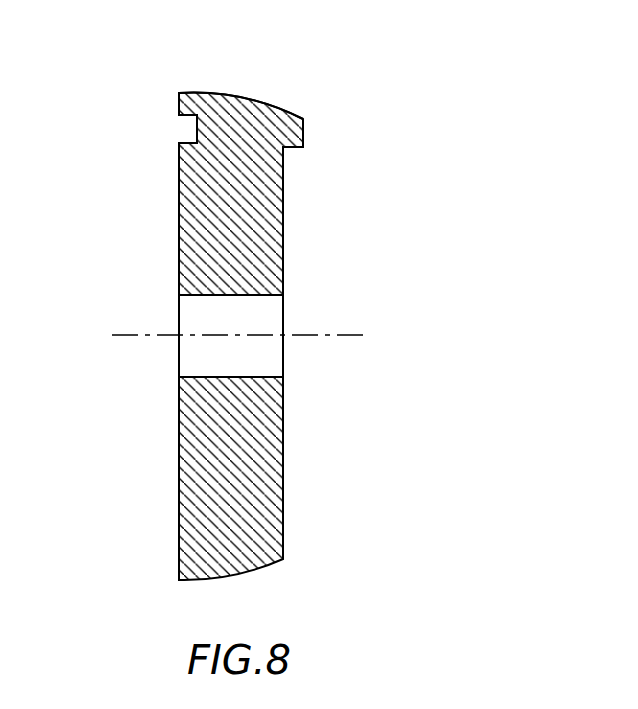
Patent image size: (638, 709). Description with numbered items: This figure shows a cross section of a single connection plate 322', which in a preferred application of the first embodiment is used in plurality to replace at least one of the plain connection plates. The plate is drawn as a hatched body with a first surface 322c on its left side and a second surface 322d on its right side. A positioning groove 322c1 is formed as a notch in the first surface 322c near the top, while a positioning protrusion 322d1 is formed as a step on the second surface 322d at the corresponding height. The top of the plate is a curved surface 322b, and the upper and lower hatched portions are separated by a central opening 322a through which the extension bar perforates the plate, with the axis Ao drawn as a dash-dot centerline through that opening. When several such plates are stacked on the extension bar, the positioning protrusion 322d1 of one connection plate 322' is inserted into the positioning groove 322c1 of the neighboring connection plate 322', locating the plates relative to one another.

The connection plate 322' is at (377, 292).
The top surface of lens 322b is at (296, 92).
The positioning groove 322c1 is at (180, 133).
The positioning protrusion 322d1 is at (303, 122).
The first surface 322c is at (177, 262).
The second surface 322d is at (283, 260).
The optical axis Ao is at (178, 338).
The central opening 322a is at (191, 359).